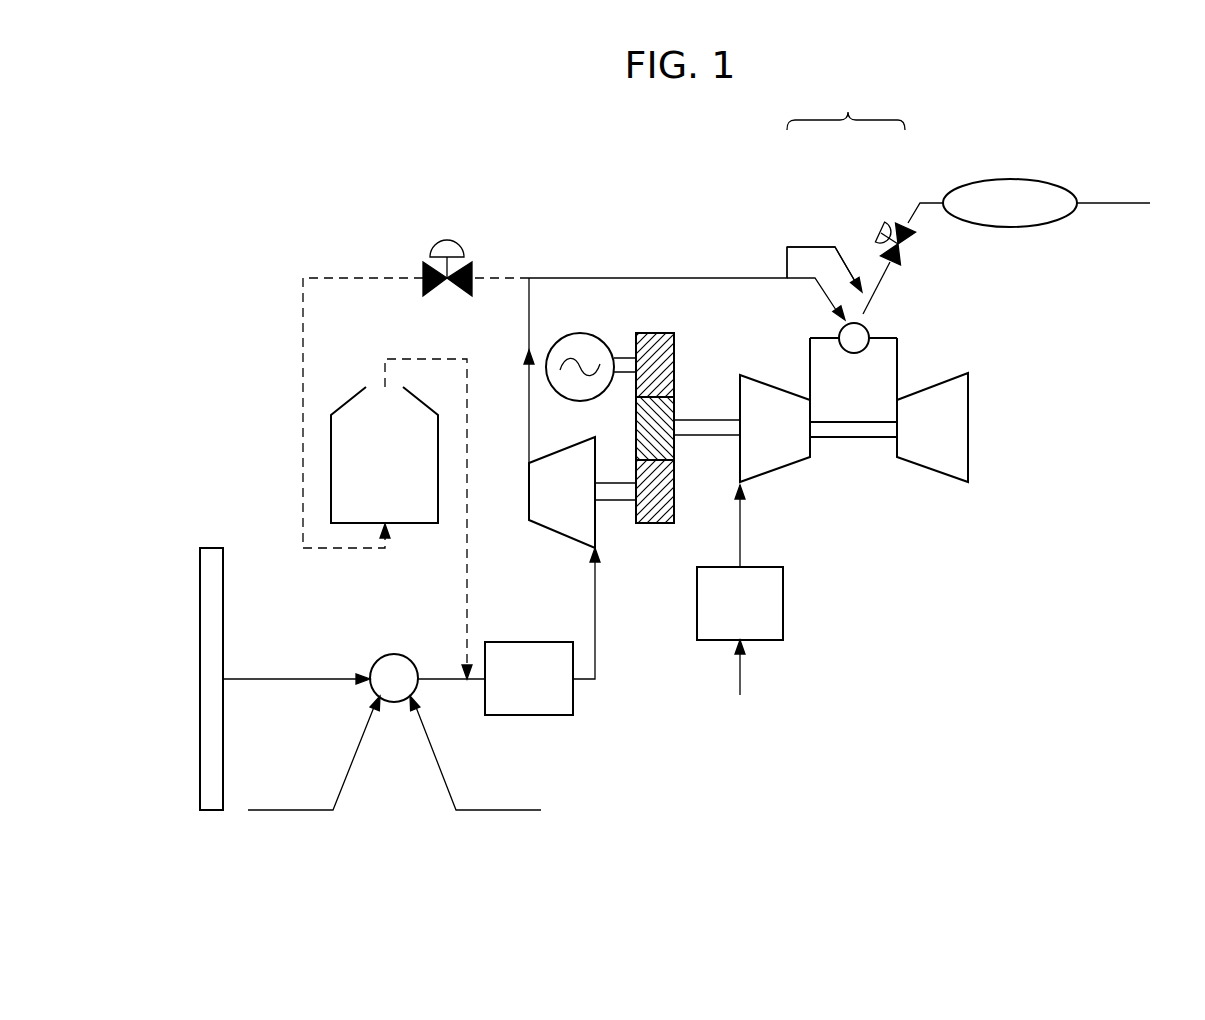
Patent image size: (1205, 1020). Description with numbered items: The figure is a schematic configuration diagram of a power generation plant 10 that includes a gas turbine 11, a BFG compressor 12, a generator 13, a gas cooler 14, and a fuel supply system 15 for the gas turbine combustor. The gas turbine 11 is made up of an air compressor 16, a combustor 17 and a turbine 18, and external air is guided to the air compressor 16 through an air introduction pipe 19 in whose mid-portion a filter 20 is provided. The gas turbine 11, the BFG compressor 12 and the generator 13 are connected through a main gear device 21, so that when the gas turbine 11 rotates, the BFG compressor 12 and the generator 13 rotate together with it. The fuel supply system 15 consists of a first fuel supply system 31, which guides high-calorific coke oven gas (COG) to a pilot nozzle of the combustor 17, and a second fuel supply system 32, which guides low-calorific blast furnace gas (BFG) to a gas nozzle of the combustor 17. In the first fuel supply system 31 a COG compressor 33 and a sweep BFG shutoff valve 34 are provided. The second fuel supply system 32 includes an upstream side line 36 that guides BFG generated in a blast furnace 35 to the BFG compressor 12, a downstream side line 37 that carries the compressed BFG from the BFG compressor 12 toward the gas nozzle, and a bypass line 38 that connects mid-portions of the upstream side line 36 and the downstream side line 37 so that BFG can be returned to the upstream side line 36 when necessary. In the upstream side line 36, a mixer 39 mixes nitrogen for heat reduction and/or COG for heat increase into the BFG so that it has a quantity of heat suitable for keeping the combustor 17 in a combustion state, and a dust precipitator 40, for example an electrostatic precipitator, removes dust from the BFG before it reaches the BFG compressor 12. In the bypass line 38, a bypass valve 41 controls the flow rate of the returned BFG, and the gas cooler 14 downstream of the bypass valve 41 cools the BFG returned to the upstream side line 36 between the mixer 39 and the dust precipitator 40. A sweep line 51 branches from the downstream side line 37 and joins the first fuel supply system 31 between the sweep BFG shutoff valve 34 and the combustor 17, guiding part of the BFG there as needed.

The power generation plant 10 is at (546, 178).
The gas turbine 11 is at (882, 422).
The BFG compressor 12 is at (545, 540).
The generator 13 is at (602, 338).
The gas cooler 14 is at (410, 526).
The fuel supply system 15 is at (846, 107).
The air compressor 16 is at (782, 476).
The combustor 17 is at (852, 354).
The turbine 18 is at (922, 476).
The air introduction pipe 19 is at (740, 544).
The filter 20 is at (785, 603).
The main gear device 21 is at (686, 355).
The first fuel supply system 31 is at (900, 190).
The second fuel supply system 32 is at (790, 215).
The COG compressor 33 is at (1010, 228).
The sweep BFG shutoff valve 34 is at (906, 257).
The blast furnace 35 is at (211, 546).
The upstream side line 36 is at (279, 678).
The downstream side line 37 is at (617, 276).
The bypass line 38 is at (341, 277).
The mixer 39 is at (390, 654).
The dust precipitator 40 is at (575, 700).
The bypass valve 41 is at (446, 234).
The sweep line 51 is at (824, 250).